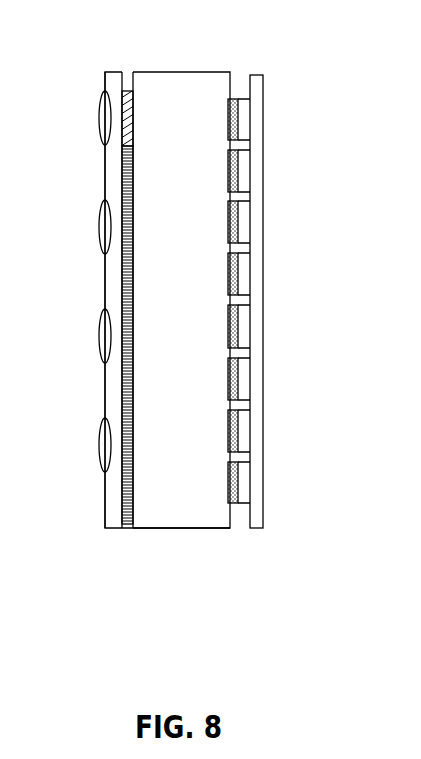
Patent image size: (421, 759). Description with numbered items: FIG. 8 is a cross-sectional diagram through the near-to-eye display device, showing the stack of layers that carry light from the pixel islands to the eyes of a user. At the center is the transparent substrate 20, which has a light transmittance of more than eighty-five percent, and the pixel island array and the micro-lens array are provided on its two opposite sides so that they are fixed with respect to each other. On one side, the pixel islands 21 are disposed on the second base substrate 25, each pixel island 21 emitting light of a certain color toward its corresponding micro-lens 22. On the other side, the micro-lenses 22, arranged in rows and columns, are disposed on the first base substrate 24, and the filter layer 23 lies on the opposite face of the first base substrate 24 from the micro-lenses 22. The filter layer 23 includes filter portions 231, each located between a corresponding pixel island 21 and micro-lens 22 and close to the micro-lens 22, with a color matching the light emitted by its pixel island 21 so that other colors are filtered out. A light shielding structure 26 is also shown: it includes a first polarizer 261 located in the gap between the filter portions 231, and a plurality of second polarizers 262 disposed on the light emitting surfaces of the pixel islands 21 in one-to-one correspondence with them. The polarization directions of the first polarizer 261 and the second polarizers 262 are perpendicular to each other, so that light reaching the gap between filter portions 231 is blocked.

The transparent substrate 20 is at (192, 72).
The pixel island 21 is at (242, 98).
The micro-lens 22 is at (97, 127).
The filter layer 23 is at (127, 64).
The filter portion 231 is at (131, 92).
The first base substrate 24 is at (103, 522).
The second base substrate 25 is at (263, 508).
The light shielding structure 26 is at (176, 393).
The first polarizer 261 is at (128, 527).
The second polarizer 262 is at (225, 526).